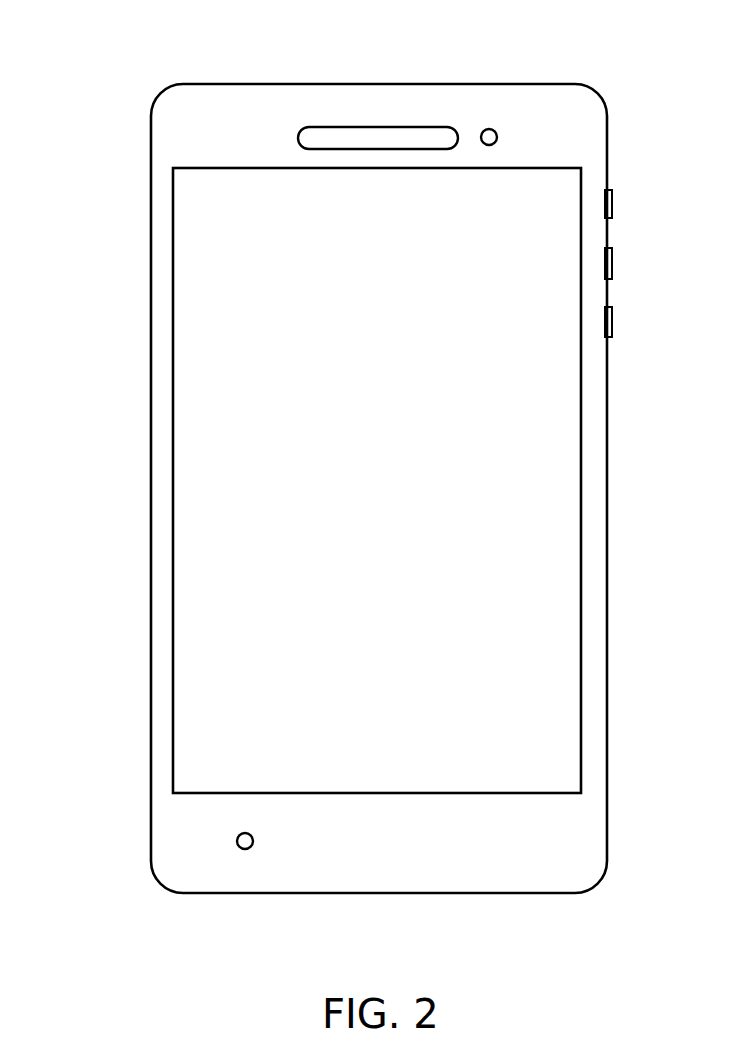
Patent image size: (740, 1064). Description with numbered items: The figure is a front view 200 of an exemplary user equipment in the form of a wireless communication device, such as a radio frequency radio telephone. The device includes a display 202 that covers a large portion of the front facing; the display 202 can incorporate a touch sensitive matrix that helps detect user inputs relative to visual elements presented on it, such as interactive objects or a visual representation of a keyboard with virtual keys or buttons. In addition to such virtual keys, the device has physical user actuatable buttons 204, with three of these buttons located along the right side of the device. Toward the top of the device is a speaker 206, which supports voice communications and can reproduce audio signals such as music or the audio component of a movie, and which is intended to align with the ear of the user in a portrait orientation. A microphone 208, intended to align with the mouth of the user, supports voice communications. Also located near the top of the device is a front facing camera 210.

The front view 200 is at (118, 67).
The display 202 is at (555, 509).
The physical user actuatable buttons 204 is at (612, 204).
The speaker 206 is at (378, 127).
The microphone 208 is at (246, 850).
The front facing camera 210 is at (489, 129).